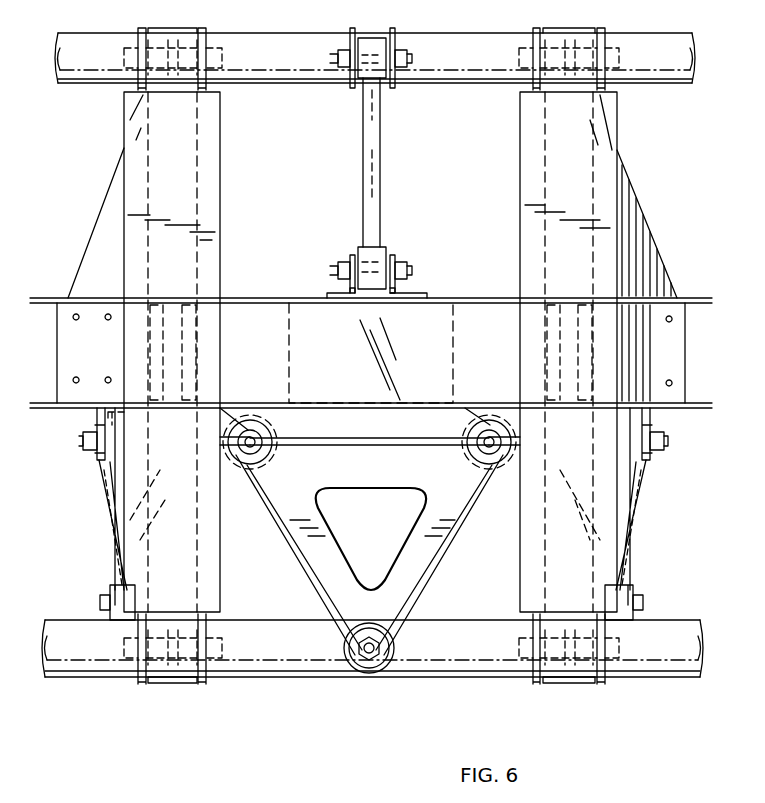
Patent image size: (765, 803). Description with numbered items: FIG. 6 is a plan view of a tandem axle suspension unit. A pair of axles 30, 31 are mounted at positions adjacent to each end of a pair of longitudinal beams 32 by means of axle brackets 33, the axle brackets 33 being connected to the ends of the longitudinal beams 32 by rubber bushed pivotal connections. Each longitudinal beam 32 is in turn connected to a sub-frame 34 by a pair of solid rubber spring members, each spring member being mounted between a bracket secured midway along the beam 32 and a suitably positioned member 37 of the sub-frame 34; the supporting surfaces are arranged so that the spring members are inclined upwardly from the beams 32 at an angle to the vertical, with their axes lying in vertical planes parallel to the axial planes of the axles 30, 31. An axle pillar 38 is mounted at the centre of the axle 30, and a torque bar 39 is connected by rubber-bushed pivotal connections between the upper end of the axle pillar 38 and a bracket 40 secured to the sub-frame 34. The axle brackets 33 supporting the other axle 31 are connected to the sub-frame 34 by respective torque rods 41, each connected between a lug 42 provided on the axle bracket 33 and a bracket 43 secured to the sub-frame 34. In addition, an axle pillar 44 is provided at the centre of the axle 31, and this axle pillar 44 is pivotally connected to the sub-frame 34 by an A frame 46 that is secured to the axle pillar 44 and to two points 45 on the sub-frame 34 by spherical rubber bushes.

The axle 30 is at (90, 65).
The axle 31 is at (78, 635).
The longitudinal beam 32 is at (162, 684).
The axle bracket 33 is at (140, 40).
The sub-frame 34 is at (325, 297).
The member 37 is at (80, 305).
The axle pillar 38 is at (350, 78).
The torque bar 39 is at (363, 176).
The bracket 40 is at (405, 287).
The torque rod 41 is at (118, 545).
The lug 42 is at (110, 592).
The bracket 43 is at (95, 460).
The axle pillar 44 is at (372, 668).
The point 45 is at (252, 455).
The A frame 46 is at (440, 550).